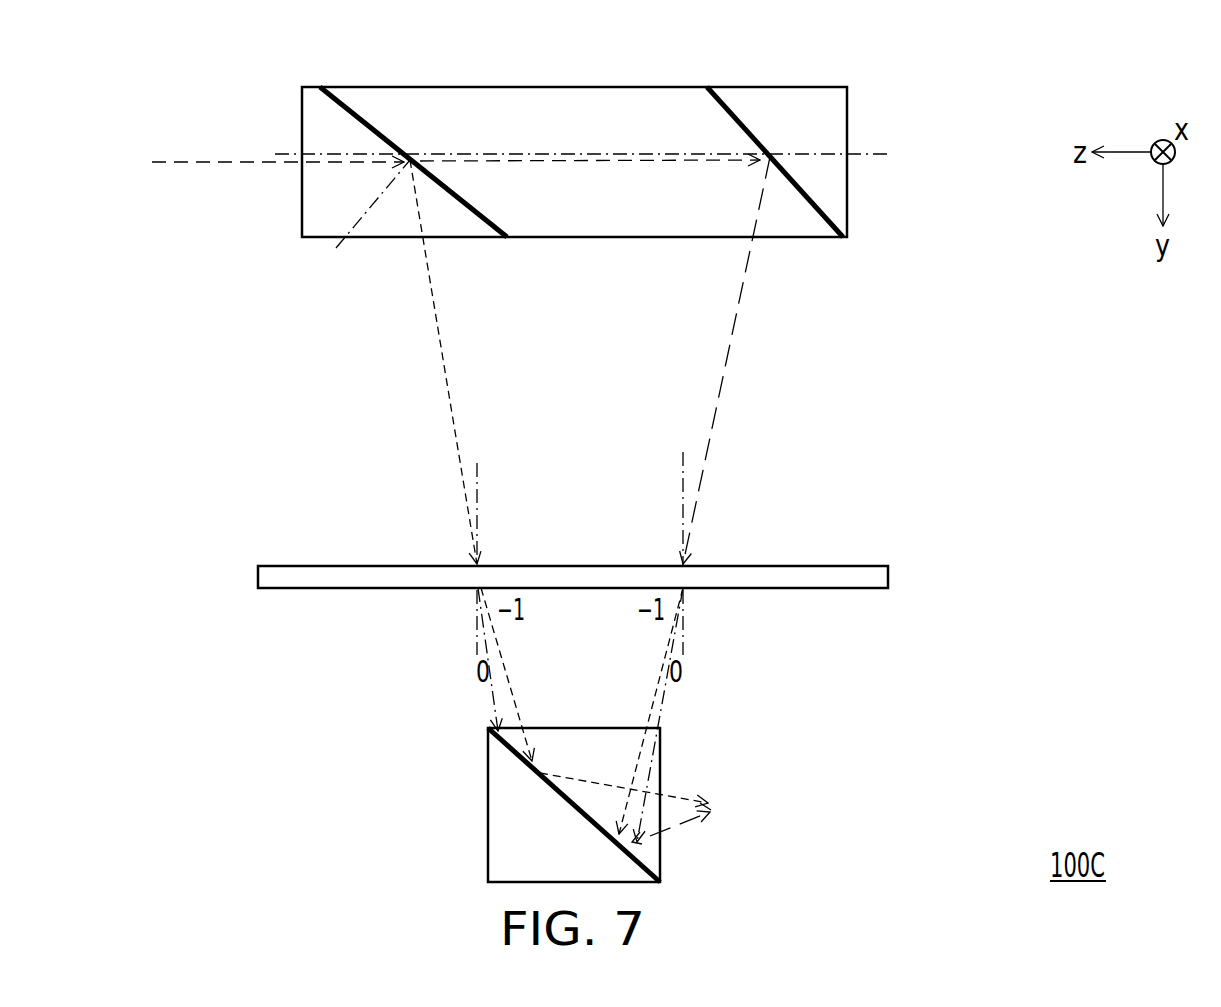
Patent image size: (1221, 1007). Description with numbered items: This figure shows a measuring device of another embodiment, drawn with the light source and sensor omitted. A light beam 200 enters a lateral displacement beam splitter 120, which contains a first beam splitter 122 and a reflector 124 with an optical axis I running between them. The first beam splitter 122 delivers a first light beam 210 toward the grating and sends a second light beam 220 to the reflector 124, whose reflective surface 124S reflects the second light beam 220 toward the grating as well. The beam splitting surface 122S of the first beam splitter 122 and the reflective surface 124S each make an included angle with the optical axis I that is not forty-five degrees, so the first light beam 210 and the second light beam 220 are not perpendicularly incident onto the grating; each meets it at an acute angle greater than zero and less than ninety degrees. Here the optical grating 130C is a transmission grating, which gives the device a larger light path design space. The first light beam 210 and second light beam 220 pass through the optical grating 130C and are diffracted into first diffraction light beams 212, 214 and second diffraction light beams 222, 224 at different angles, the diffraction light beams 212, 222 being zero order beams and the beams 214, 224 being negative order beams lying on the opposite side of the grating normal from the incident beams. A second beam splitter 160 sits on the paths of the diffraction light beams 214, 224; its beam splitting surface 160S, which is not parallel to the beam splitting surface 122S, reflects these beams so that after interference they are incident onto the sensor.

The lateral displacement beam splitter 120 is at (567, 97).
The first beam splitter 122 is at (360, 104).
The beam splitting surface 122S is at (380, 130).
The reflector 124 is at (735, 110).
The reflective surface 124S is at (756, 134).
The optical grating 130C is at (888, 578).
The second beam splitter 160 is at (505, 783).
The beam splitting surface 160S is at (575, 811).
The light beam 200 is at (180, 158).
The first light beam 210 is at (440, 358).
The first diffraction light beam 212 is at (495, 697).
The first diffraction light beam 214 is at (511, 686).
The second light beam 220 is at (735, 345).
The second diffraction light beam 222 is at (662, 700).
The second diffraction light beam 224 is at (655, 693).
The optical axis I is at (876, 153).